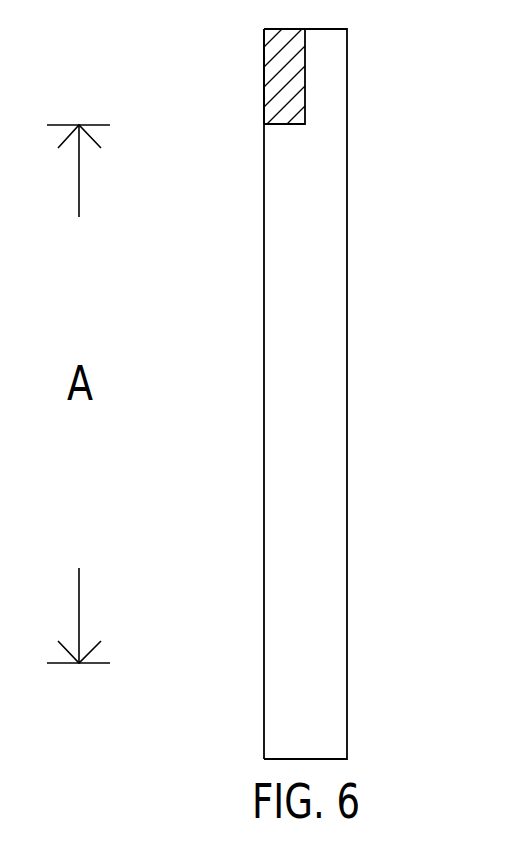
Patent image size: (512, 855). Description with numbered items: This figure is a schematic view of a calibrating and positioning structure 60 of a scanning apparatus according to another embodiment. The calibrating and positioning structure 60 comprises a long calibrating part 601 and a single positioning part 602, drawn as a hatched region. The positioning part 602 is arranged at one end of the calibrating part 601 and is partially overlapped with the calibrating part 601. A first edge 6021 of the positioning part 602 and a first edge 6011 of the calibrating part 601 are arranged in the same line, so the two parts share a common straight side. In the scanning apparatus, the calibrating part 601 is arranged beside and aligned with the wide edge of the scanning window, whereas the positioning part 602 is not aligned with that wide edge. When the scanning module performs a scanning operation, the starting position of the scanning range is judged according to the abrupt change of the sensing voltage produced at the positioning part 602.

The calibrating and positioning structure 60 is at (478, 58).
The calibrating part 601 is at (317, 302).
The first edge of the calibrating part 6011 is at (264, 394).
The positioning part 602 is at (282, 88).
The first edge of the positioning part 6021 is at (264, 110).